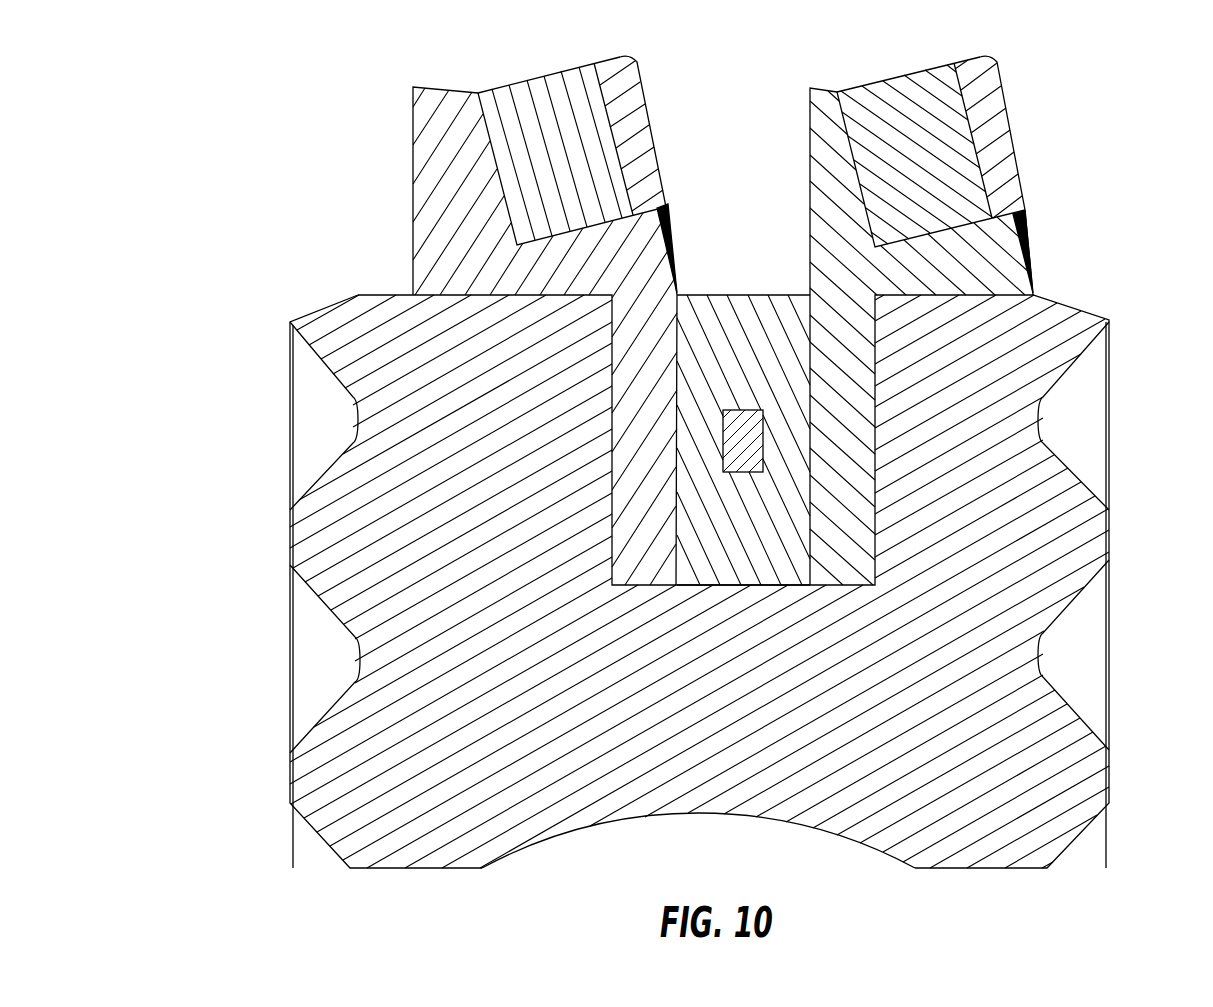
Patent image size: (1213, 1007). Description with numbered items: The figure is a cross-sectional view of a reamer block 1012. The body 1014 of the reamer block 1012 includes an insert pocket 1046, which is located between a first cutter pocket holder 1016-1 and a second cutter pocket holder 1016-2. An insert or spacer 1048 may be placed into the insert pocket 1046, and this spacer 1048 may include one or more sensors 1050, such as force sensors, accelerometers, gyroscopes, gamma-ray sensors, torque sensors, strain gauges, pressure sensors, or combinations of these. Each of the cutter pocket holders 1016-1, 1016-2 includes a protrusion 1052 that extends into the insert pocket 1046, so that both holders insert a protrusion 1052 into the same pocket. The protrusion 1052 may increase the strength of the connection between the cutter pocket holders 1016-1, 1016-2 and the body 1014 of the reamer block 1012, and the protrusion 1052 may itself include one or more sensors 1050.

The reamer block 1012 is at (1102, 87).
The body 1014 is at (1063, 523).
The first cutter pocket holder 1016-1 is at (822, 102).
The second cutter pocket holder 1016-2 is at (433, 103).
The insert pocket 1046 is at (837, 590).
The spacer 1048 is at (767, 295).
The sensors 1050 is at (740, 410).
The protrusion 1052 is at (852, 480).